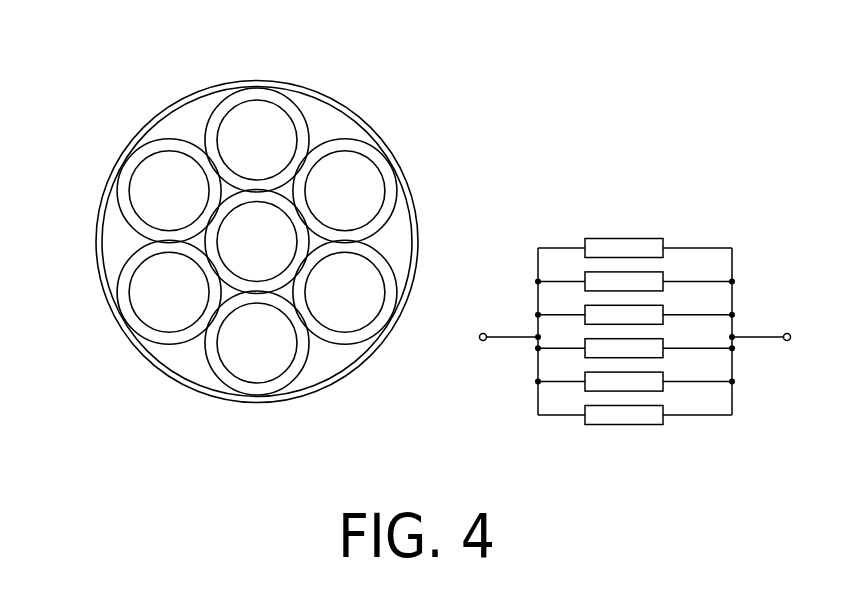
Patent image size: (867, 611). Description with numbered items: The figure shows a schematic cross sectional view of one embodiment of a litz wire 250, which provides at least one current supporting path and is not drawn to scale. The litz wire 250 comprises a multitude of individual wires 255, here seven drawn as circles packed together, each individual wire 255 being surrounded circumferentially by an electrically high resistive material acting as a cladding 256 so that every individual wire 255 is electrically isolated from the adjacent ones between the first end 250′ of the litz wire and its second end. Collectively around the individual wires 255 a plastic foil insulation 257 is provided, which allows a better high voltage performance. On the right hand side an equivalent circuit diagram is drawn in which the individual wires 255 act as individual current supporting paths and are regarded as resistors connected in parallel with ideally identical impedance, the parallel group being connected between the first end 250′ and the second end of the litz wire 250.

The litz wire 250 is at (85, 98).
The individual wire 255 is at (282, 152).
The cladding 256 is at (378, 157).
The plastic foil insulation 257 is at (408, 273).
The first end of the litz wire 250′ is at (483, 341).